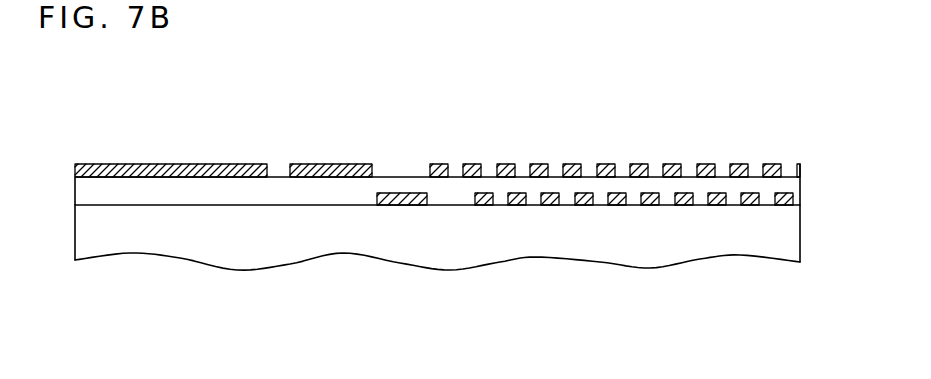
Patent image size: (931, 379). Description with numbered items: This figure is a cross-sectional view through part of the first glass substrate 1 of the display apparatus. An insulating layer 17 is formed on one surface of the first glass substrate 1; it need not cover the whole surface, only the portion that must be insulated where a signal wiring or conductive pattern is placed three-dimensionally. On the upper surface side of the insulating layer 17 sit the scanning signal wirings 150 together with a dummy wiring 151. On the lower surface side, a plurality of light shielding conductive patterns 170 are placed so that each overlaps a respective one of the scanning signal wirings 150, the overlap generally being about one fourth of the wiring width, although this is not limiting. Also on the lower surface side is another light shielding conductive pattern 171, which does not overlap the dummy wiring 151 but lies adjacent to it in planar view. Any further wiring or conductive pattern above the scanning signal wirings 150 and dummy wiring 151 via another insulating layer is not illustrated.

The first glass substrate 1 is at (792, 232).
The insulating layer 17 is at (790, 184).
The scanning signal wirings 150 is at (472, 164).
The dummy wiring 151 is at (437, 164).
The light shielding conductive patterns 170 is at (484, 205).
The another light shielding conductive pattern 171 is at (402, 205).